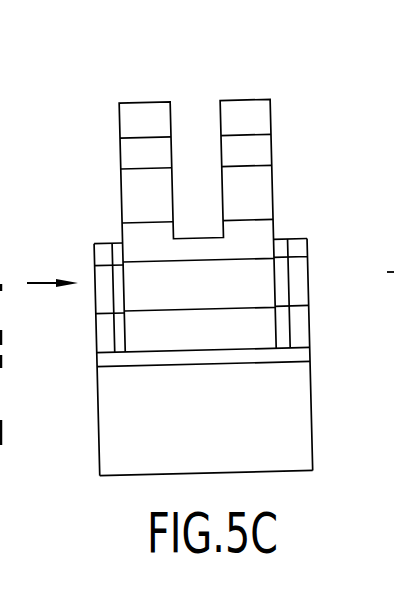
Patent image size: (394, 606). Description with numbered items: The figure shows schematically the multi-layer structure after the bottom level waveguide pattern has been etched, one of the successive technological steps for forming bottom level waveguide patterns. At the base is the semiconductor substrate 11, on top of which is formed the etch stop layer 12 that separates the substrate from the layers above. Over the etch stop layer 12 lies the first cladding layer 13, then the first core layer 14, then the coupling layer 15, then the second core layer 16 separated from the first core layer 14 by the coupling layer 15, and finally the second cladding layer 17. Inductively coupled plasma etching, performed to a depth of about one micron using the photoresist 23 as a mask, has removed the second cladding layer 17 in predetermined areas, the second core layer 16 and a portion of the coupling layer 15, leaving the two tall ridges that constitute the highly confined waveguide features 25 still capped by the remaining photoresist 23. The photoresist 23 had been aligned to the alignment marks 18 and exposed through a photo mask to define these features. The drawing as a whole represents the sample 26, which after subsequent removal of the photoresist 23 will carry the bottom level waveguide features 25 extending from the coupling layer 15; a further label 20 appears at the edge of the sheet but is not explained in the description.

The semiconductor substrate 11 is at (312, 420).
The etch stop layer 12 is at (309, 355).
The first cladding layer 13 is at (309, 325).
The first core layer 14 is at (309, 283).
The coupling layer 15 is at (258, 238).
The second core layer 16 is at (268, 190).
The second cladding layer 17 is at (275, 150).
The alignment marks 18 is at (280, 340).
The structure 20 is at (385, 108).
The photoresist 23 is at (145, 108).
The waveguide features 25 is at (206, 147).
The sample 26 is at (80, 135).